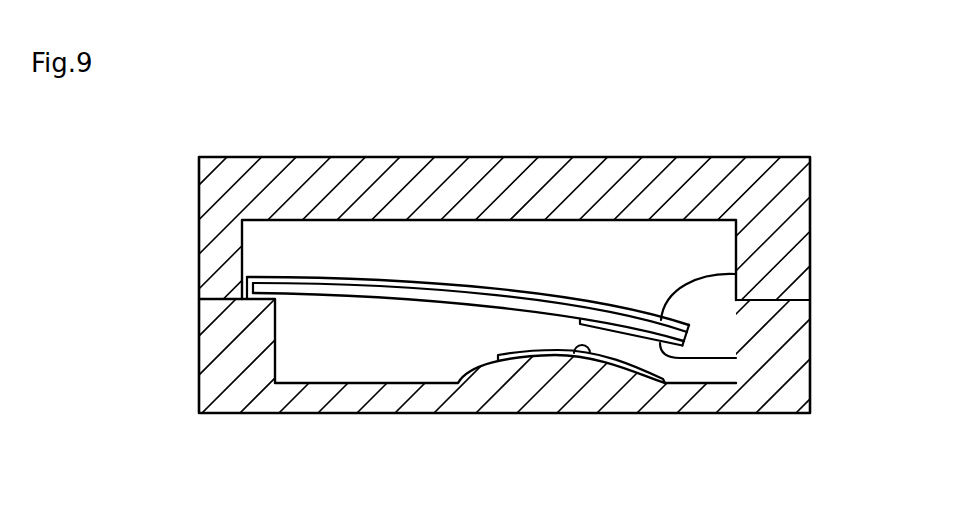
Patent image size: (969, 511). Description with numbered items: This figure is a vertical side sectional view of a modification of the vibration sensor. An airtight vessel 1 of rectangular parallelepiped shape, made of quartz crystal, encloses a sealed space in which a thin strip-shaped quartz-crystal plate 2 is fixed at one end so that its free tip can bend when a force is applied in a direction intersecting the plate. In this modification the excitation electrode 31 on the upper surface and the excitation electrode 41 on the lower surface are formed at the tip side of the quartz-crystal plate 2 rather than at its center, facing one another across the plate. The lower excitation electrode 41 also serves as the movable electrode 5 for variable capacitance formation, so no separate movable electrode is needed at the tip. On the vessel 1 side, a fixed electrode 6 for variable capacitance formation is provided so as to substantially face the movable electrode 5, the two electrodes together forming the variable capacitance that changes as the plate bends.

The airtight vessel 1 is at (683, 157).
The quartz-crystal plate 2 is at (475, 297).
The excitation electrode 31 is at (736, 274).
The excitation electrode 41 is at (736, 358).
The movable electrode 5 is at (497, 356).
The fixed electrode 6 is at (592, 352).